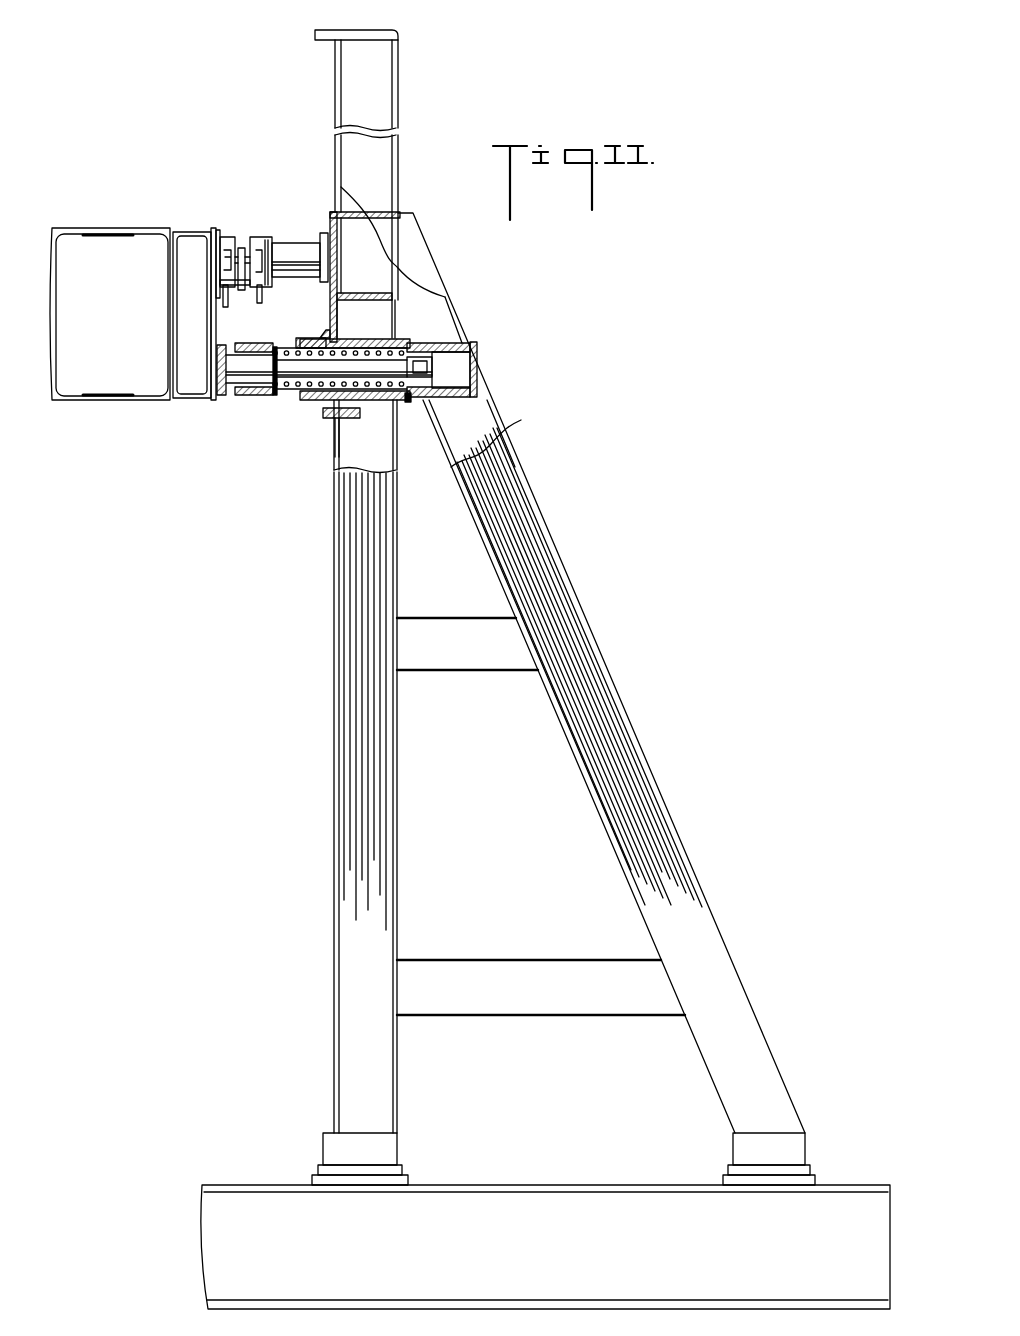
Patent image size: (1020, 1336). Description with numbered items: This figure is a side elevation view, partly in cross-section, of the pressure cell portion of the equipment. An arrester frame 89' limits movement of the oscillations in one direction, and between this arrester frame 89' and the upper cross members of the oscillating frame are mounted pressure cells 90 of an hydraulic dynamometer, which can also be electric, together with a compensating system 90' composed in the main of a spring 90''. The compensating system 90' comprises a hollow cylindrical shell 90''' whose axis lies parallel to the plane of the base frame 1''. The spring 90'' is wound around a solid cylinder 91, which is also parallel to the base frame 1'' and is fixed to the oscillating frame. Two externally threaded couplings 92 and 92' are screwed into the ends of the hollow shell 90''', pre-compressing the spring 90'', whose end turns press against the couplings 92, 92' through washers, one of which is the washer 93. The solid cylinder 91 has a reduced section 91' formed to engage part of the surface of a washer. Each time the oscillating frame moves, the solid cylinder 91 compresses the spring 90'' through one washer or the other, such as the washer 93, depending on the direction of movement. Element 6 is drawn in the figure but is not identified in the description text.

The base frame 1'' is at (545, 1217).
The motor 6 is at (95, 402).
The arrester frame 89' is at (360, 581).
The pressure cell 90 is at (272, 235).
The compensating system 90' is at (340, 406).
The spring 90'' is at (355, 355).
The hollow cylindrical shell 90''' is at (304, 322).
The solid cylinder 91 is at (331, 344).
The reduced section 91' is at (249, 404).
The externally threaded coupling 92 is at (478, 357).
The externally threaded coupling 92' is at (205, 398).
The washer 93 is at (278, 397).